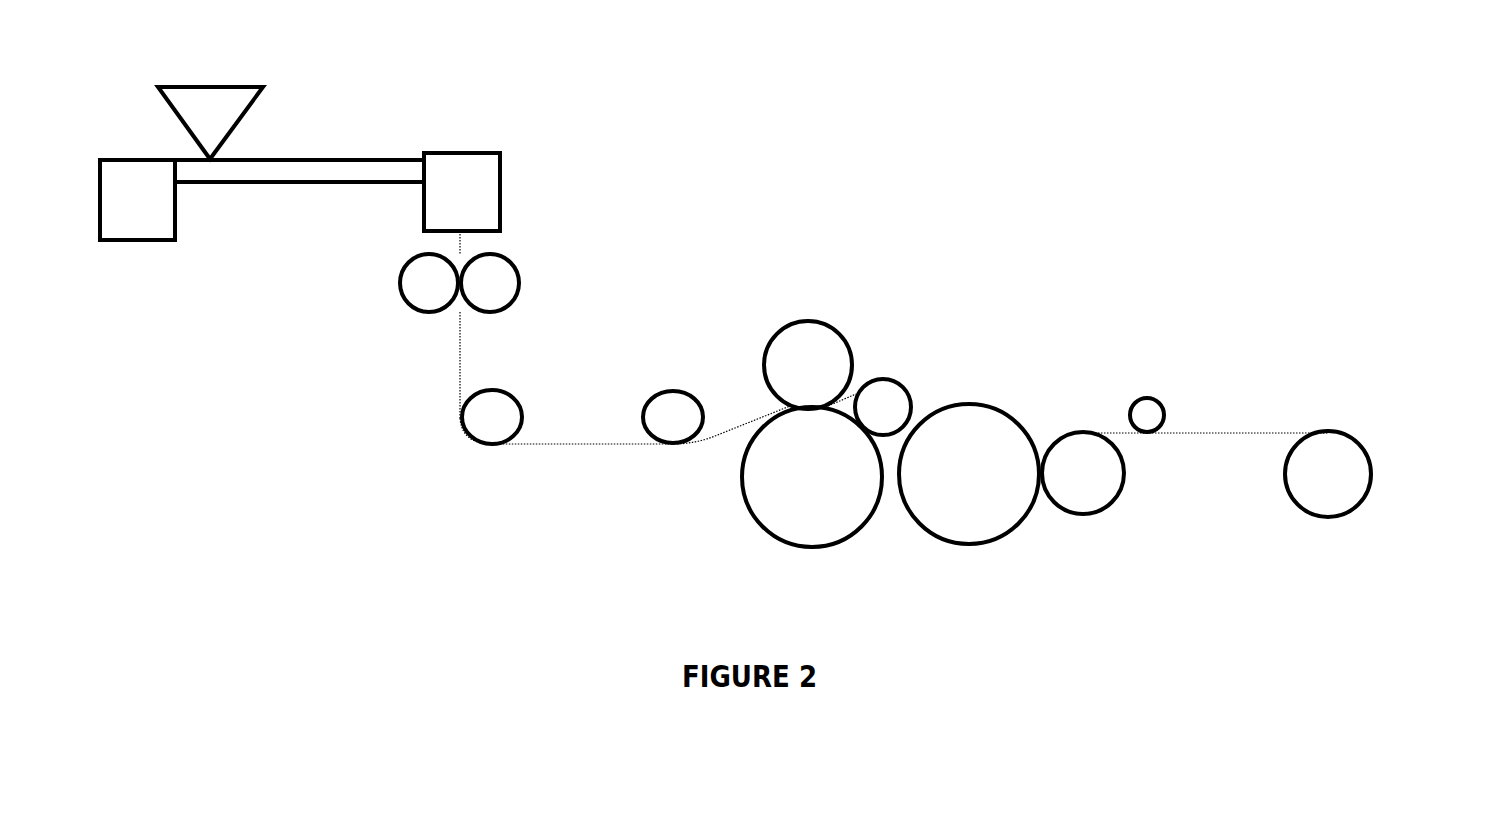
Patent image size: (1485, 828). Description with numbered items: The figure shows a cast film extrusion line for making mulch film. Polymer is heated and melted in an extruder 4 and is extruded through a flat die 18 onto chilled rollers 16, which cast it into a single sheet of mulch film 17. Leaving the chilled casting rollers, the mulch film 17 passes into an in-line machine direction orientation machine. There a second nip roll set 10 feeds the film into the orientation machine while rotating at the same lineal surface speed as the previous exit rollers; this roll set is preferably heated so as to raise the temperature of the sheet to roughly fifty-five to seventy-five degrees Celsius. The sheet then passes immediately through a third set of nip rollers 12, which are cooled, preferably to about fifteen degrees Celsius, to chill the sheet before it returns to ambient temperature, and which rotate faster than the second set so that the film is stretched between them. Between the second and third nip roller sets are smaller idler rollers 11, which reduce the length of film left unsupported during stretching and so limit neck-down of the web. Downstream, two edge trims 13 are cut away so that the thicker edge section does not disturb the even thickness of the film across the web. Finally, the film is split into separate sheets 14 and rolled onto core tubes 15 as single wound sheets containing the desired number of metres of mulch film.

The extruder 4 is at (347, 151).
The flat die 18 is at (511, 203).
The chilled rollers 16 is at (522, 290).
The mulch film 17 is at (456, 358).
The second nip roll set 10 is at (765, 343).
The idler rollers 11 is at (905, 390).
The third set of nip rollers 12 is at (1021, 523).
The edge trims 13 is at (1132, 402).
The separate sheets 14 is at (1216, 440).
The core tubes 15 is at (1373, 475).